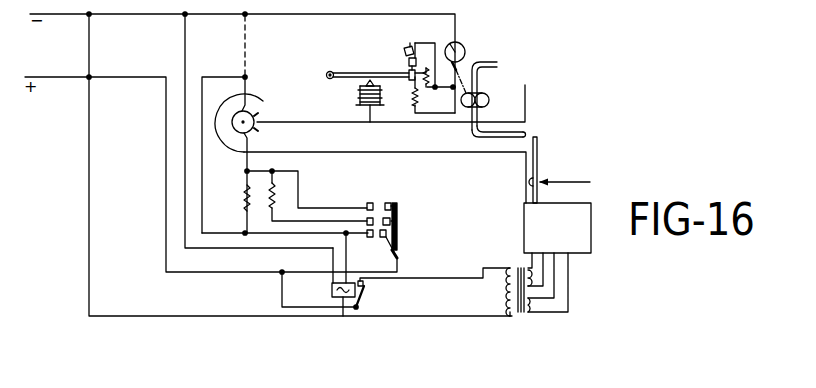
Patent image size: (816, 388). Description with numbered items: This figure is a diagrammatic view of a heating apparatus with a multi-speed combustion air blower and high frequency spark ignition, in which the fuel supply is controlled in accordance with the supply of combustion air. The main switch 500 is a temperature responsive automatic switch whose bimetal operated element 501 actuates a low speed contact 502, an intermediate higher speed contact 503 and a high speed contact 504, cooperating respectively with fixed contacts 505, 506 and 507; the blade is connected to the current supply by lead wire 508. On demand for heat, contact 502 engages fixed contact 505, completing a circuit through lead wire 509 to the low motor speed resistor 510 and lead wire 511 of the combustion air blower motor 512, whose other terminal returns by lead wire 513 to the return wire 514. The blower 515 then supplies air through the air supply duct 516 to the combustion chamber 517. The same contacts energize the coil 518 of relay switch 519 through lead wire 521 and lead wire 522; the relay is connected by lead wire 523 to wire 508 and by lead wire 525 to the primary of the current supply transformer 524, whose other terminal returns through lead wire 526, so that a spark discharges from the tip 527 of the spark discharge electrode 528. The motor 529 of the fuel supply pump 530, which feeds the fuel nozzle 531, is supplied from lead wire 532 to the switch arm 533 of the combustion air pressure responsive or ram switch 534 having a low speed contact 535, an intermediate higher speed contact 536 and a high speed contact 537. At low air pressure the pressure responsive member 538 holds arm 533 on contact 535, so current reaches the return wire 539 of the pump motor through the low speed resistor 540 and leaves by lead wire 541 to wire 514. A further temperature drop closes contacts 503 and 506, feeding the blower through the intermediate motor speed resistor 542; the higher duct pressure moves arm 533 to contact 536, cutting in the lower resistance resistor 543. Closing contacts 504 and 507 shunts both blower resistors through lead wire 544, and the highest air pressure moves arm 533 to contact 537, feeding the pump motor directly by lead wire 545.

The main switch 500 is at (392, 214).
The bimetal operated element 501 is at (399, 246).
The low speed contact 502 is at (397, 259).
The intermediate higher speed contact 503 is at (387, 202).
The high speed contact 504 is at (396, 204).
The fixed contact 505 is at (368, 236).
The fixed contact 506 is at (366, 219).
The fixed contact 507 is at (368, 202).
The lead wire 508 is at (165, 229).
The lead wire 509 is at (294, 234).
The low motor speed resistor 510 is at (245, 192).
The lead wire 511 is at (249, 136).
The combustion air blower motor 512 is at (258, 120).
The lead wire 513 is at (248, 60).
The return wire 514 is at (140, 16).
The blower 515 is at (257, 100).
The air supply duct 516 is at (468, 146).
The combustion chamber 517 is at (578, 170).
The coil 518 is at (343, 316).
The relay switch 519 is at (367, 297).
The lead wire 521 is at (332, 259).
The lead wire 522 is at (210, 249).
The lead wire 523 is at (281, 301).
The current supply transformer 524 is at (528, 320).
The lead wire 525 is at (441, 280).
The lead wire 526 is at (437, 317).
The tip 527 is at (538, 137).
The spark discharge electrode 528 is at (528, 182).
The motor 529 is at (463, 46).
The fuel supply pump 530 is at (489, 96).
The fuel nozzle 531 is at (517, 129).
The lead wire 532 is at (237, 76).
The switch arm 533 is at (349, 72).
The combustion air pressure responsive or ram switch 534 is at (395, 56).
The low speed contact 535 is at (421, 78).
The intermediate higher speed contact 536 is at (407, 46).
The high speed contact 537 is at (411, 46).
The pressure responsive member 538 is at (360, 98).
The return wire 539 is at (471, 67).
The low speed resistor 540 is at (412, 102).
The lead wire 541 is at (318, 15).
The intermediate motor speed resistor 542 is at (274, 196).
The intermediate or lower resistance resistor 543 is at (435, 78).
The lead wire 544 is at (301, 187).
The lead wire 545 is at (416, 45).